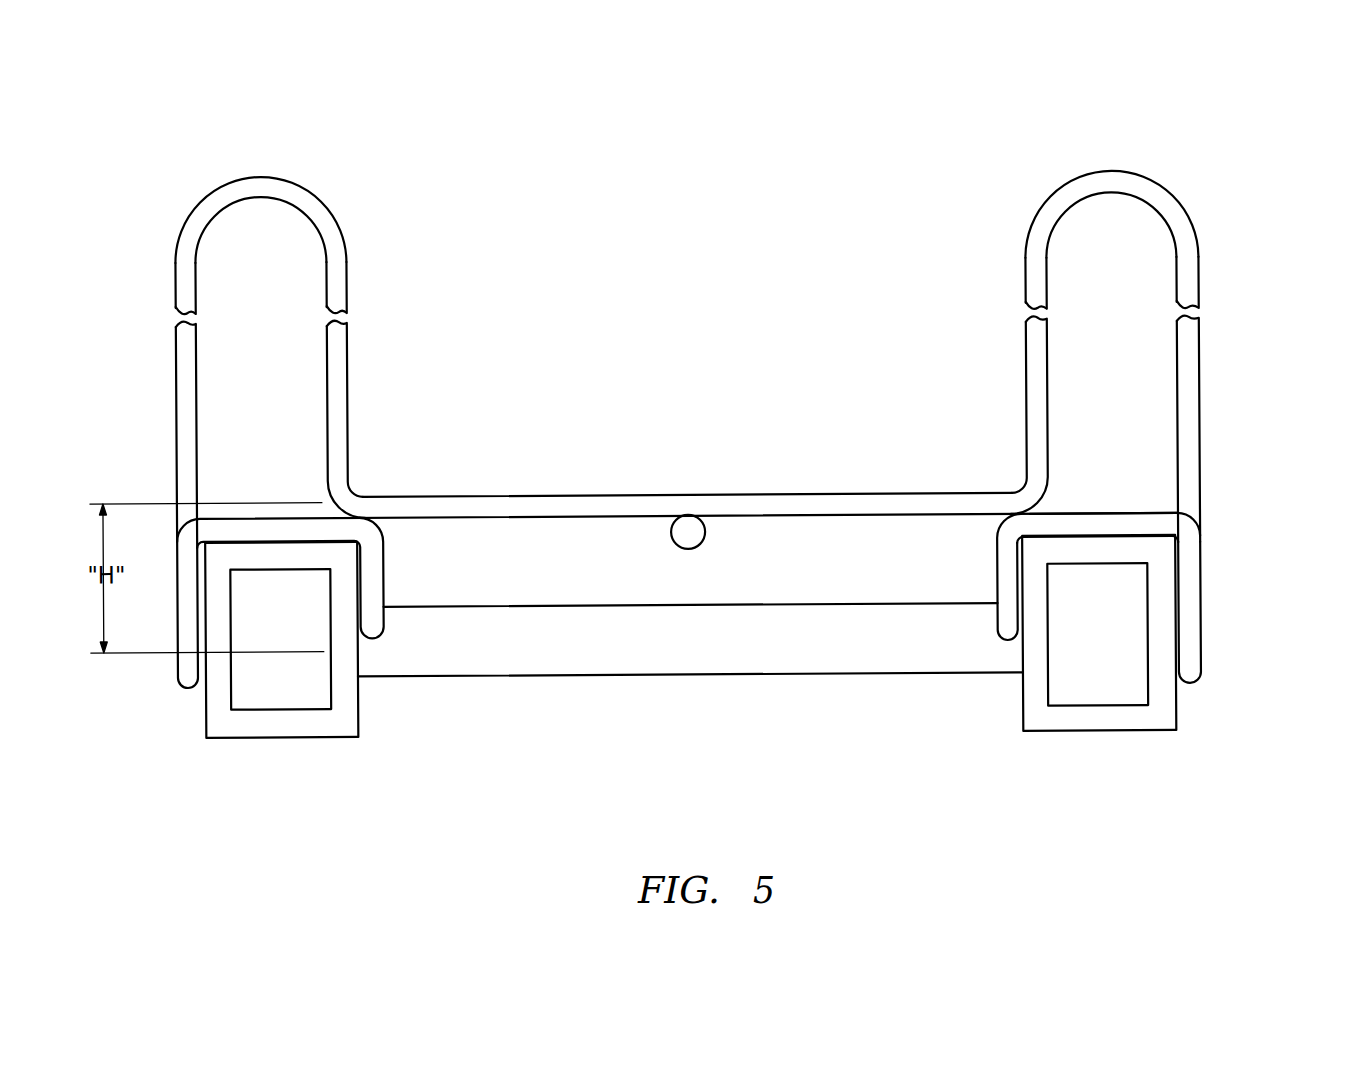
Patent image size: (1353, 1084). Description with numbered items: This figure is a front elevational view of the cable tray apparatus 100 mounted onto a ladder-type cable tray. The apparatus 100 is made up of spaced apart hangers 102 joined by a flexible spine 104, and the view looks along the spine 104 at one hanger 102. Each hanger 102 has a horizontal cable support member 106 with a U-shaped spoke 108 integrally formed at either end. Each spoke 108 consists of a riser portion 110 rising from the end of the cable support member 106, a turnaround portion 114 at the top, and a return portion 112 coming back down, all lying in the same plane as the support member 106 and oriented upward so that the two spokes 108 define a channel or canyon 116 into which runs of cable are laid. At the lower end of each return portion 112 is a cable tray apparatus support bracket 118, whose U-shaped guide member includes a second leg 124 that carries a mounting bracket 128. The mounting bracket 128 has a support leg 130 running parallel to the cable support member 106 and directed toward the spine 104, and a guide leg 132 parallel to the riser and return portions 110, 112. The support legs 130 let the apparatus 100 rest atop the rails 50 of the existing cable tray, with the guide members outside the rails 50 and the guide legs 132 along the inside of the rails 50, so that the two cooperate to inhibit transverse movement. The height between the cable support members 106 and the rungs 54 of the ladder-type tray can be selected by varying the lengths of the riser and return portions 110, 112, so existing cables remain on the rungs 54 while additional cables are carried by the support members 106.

The cable tray apparatus 100 is at (711, 392).
The hanger 102 is at (180, 201).
The flexible spine 104 is at (688, 532).
The cable support member 106 is at (563, 497).
The U-shaped spoke 108 is at (347, 231).
The riser portion 110 is at (1025, 284).
The return portion 112 is at (1200, 282).
The turnaround portion 114 is at (1110, 328).
The channel or canyon 116 is at (572, 279).
The cable tray apparatus support bracket 118 is at (1122, 555).
The second leg 124 is at (1188, 636).
The mounting bracket 128 is at (1060, 514).
The support leg 130 is at (1132, 523).
The guide leg 132 is at (1002, 577).
The rail 50 is at (317, 733).
The rung 54 is at (545, 658).